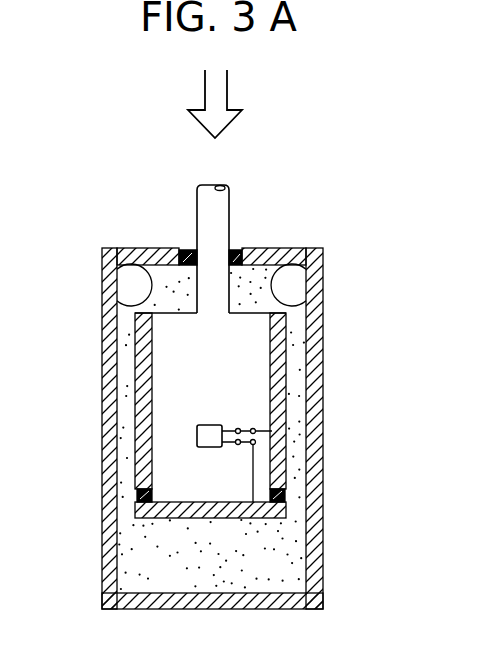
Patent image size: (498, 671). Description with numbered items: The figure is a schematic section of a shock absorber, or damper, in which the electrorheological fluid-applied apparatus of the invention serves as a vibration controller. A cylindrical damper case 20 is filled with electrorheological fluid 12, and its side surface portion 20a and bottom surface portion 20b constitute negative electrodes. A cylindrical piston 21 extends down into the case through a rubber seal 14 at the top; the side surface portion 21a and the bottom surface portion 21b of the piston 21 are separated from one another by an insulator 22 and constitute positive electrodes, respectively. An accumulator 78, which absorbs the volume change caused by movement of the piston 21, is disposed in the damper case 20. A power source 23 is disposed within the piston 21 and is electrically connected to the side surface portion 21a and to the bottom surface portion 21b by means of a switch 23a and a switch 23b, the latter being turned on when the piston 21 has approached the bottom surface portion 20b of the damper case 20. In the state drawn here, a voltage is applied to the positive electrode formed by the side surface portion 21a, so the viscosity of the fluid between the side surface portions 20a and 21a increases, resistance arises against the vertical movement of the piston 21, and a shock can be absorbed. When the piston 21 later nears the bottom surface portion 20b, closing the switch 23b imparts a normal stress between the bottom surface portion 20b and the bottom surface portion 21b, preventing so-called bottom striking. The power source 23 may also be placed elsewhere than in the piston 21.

The electrorheological fluid 12 is at (280, 566).
The rubber seal 14 is at (233, 256).
The damper case 20 is at (153, 258).
The side surface portion of damper case 20a is at (105, 407).
The bottom surface portion of damper case 20b is at (298, 598).
The piston 21 is at (199, 197).
The side surface portion of piston 21a is at (279, 399).
The bottom surface portion of piston 21b is at (170, 515).
The insulator 22 is at (154, 497).
The power source 23 is at (213, 425).
The switch 23a is at (247, 427).
The switch 23b is at (235, 449).
The accumulator 78 is at (291, 292).